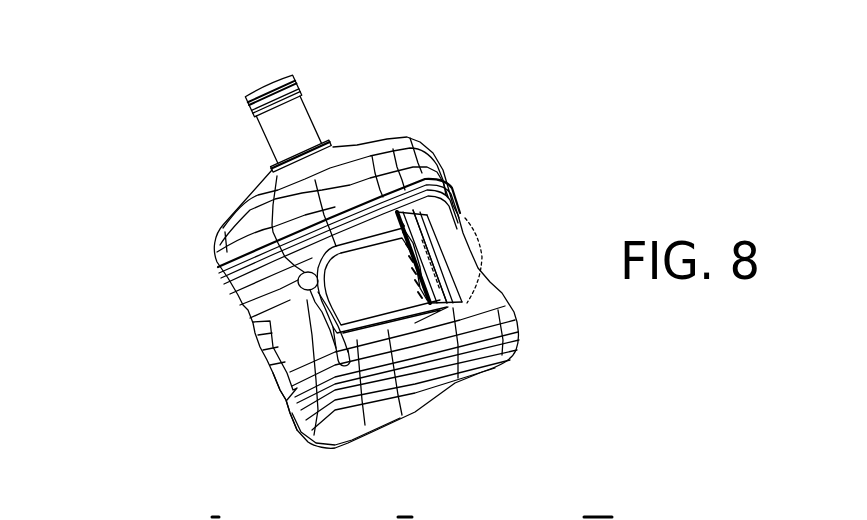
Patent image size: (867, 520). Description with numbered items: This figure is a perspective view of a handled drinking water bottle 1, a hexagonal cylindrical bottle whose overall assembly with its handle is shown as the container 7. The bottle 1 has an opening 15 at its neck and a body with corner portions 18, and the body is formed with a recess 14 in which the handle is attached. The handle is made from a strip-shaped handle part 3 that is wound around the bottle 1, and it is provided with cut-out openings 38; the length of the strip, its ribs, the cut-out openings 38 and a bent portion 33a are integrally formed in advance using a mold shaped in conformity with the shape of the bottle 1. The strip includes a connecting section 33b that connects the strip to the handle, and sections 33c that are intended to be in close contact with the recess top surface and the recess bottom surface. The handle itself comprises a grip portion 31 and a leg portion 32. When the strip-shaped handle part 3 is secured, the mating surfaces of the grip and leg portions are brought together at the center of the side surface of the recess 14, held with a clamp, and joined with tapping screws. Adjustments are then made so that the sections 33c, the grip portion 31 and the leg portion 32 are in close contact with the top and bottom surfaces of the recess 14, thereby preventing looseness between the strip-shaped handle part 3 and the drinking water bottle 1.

The drinking water bottle 1 is at (402, 133).
The strip-shaped handle part 3 is at (300, 341).
The bottle container 7 is at (195, 152).
The recess 14 is at (467, 218).
The opening 15 is at (267, 76).
The corner portion 18 is at (339, 335).
The grip portion 31 is at (440, 237).
The leg portion 32 is at (427, 268).
The bent portion 33a is at (313, 320).
The connecting section of strip to handle 33b is at (367, 287).
The section of strip in close contact with recess top or bottom surface 33c is at (450, 307).
The cut-out opening 38 is at (256, 350).